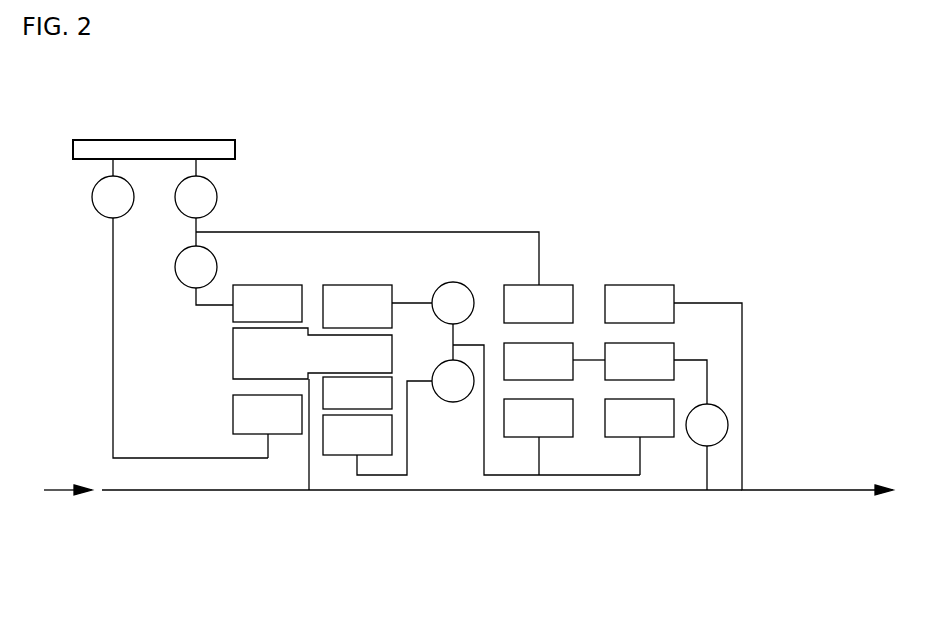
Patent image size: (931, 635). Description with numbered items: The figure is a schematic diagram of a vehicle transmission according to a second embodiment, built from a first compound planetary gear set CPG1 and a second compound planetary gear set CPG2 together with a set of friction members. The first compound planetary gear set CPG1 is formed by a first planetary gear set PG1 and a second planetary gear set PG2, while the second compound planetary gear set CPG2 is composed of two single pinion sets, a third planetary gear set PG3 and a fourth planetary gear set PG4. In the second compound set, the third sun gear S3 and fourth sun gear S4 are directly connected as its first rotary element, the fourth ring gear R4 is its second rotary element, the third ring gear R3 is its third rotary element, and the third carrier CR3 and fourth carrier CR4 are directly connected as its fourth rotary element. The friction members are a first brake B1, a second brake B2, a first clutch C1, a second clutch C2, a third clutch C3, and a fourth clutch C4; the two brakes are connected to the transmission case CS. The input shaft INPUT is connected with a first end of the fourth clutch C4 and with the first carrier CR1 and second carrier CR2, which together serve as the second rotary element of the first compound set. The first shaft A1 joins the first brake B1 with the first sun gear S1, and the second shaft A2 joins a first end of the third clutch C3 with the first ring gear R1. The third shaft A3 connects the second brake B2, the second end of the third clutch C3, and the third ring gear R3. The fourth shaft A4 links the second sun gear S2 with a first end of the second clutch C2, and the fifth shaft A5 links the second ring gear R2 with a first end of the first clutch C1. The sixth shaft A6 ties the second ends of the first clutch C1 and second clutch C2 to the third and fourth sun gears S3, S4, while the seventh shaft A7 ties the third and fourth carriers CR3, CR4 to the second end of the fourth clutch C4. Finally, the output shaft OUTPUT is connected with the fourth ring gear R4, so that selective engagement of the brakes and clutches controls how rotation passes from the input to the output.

The transmission case CS is at (156, 140).
The first brake B1 is at (113, 188).
The second brake B2 is at (196, 188).
The first clutch C1 is at (453, 303).
The second clutch C2 is at (453, 381).
The third clutch C3 is at (196, 253).
The fourth clutch C4 is at (707, 425).
The first ring gear R1 is at (267, 303).
The second ring gear R2 is at (357, 306).
The third ring gear R3 is at (538, 304).
The fourth ring gear R4 is at (639, 304).
The first carrier CR1 is at (312, 409).
The second carrier CR2 is at (357, 375).
The third carrier CR3 is at (554, 361).
The fourth carrier CR4 is at (639, 361).
The first sun gear S1 is at (267, 426).
The second sun gear S2 is at (357, 435).
The third sun gear S3 is at (538, 418).
The fourth sun gear S4 is at (639, 418).
The first shaft A1 is at (113, 368).
The second shaft A2 is at (212, 305).
The third shaft A3 is at (334, 231).
The fourth shaft A4 is at (407, 475).
The fifth shaft A5 is at (409, 303).
The sixth shaft A6 is at (510, 476).
The seventh shaft A7 is at (690, 358).
The first planetary gear set PG1 is at (312, 424).
The second planetary gear set PG2 is at (357, 424).
The third planetary gear set PG3 is at (554, 424).
The fourth planetary gear set PG4 is at (645, 424).
The first compound planetary gear set CPG1 is at (365, 568).
The second compound planetary gear set CPG2 is at (678, 568).
The input shaft INPUT is at (193, 490).
The output shaft OUTPUT is at (742, 367).